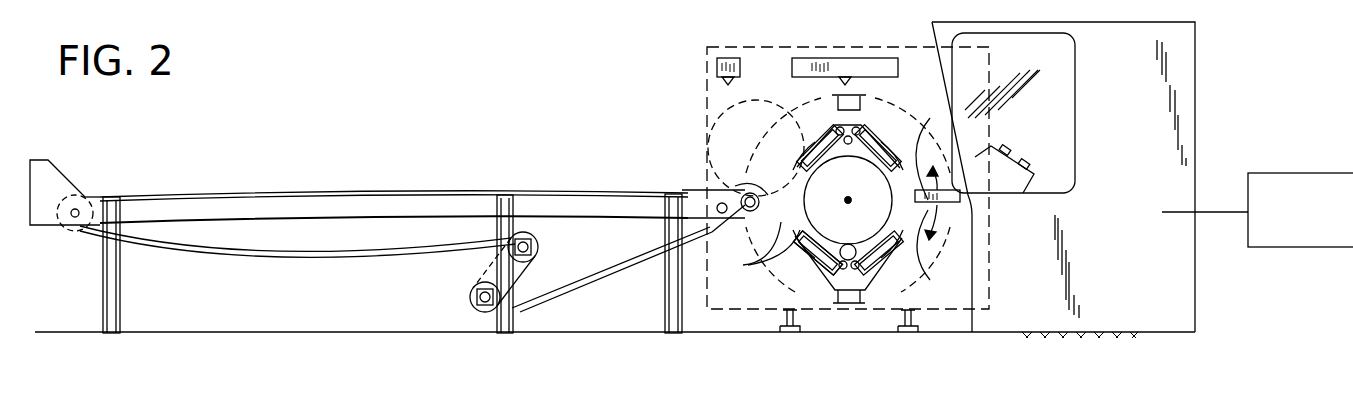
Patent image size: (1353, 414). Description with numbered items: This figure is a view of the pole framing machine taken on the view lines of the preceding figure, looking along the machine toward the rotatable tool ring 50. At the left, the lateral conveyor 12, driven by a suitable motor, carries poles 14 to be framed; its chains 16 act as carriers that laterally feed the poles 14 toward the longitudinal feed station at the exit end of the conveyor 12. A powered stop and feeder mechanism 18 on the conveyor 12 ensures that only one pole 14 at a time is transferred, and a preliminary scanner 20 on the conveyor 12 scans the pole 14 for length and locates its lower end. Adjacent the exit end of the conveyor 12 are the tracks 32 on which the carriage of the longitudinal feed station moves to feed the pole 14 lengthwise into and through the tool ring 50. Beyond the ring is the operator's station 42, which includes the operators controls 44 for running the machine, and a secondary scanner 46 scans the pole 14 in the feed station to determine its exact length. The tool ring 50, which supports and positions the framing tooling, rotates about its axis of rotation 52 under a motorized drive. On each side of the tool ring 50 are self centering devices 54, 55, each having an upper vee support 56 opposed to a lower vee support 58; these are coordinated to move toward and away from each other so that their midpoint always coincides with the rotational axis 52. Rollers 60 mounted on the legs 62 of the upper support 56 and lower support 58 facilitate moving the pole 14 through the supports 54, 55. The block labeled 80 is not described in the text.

The lateral conveyor 12 is at (185, 215).
The chains 16 is at (333, 192).
The pole 14 is at (704, 106).
The powered stop and feeder mechanism 18 is at (748, 262).
The preliminary scanner 20 is at (727, 58).
The tracks 32 is at (800, 318).
The operator's station 42 is at (1114, 115).
The operators controls 44 is at (1018, 152).
The secondary scanner 46 is at (833, 57).
The rotatable tool ring 50 is at (910, 47).
The axis of rotation 52 is at (851, 200).
The self centering device 54 is at (756, 298).
The self centering device 55 is at (797, 258).
The upper vee support 56 is at (830, 127).
The lower vee support 58 is at (900, 281).
The rollers 60 is at (848, 200).
The legs 62 is at (822, 127).
The controller 80 is at (1317, 222).